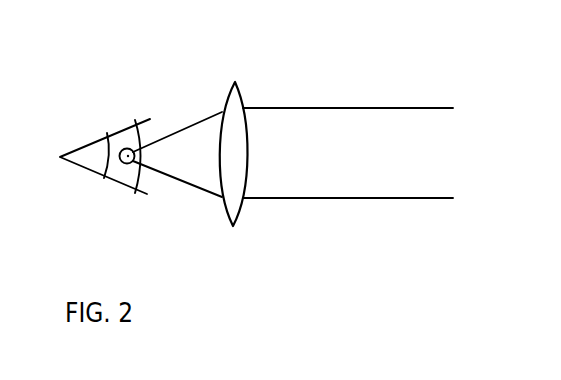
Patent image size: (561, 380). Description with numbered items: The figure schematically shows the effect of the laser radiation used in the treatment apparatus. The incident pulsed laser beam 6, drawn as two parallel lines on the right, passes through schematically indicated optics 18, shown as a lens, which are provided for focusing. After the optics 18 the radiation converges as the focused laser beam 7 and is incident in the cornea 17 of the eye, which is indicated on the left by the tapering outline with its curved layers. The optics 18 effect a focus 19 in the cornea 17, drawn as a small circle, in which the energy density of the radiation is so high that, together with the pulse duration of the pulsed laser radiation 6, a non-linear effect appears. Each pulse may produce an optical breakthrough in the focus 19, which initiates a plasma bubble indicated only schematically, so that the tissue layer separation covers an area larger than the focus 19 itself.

The laser beam 6 is at (347, 200).
The focused laser beam 7 is at (192, 125).
The cornea 17 is at (122, 138).
The optics 18 is at (249, 94).
The focus 19 is at (125, 165).